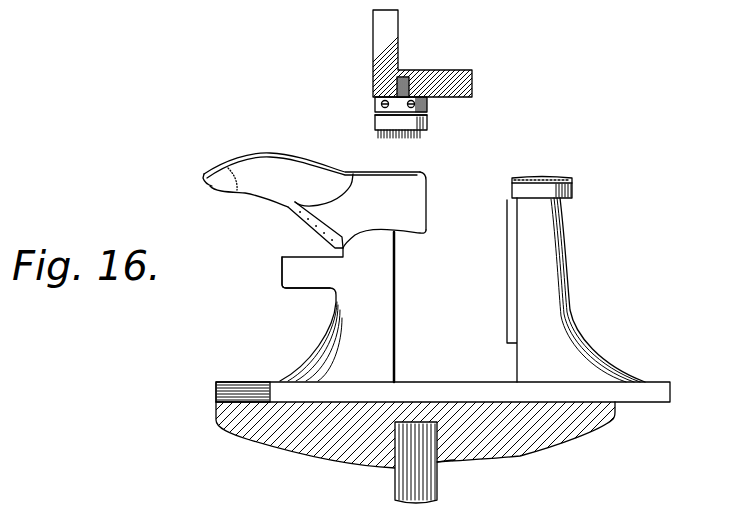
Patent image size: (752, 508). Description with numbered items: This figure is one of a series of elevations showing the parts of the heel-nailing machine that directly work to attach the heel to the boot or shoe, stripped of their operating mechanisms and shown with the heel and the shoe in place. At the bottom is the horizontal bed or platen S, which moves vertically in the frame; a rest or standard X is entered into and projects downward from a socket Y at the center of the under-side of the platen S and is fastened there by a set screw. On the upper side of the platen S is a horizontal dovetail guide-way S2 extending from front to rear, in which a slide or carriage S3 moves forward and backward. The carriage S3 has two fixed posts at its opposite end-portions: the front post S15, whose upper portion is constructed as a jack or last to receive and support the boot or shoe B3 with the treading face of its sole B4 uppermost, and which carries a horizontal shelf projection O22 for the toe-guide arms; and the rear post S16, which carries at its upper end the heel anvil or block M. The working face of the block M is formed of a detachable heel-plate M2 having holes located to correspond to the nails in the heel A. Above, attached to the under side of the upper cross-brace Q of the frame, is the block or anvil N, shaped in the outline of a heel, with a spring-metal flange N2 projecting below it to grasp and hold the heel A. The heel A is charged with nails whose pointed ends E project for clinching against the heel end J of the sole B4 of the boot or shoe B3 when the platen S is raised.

The upper cross brace Q is at (473, 83).
The block or anvil N is at (375, 103).
The flange N2 is at (428, 105).
The heel A is at (428, 122).
The nail points E is at (420, 135).
The sole B4 is at (330, 165).
The heel end of sole J is at (408, 191).
The boot or shoe B3 is at (318, 208).
The horizontal shelf projection O22 is at (306, 272).
The front post S15 is at (337, 307).
The rear post S16 is at (576, 290).
The anvil or block M is at (572, 192).
The heel-plate M2 is at (572, 181).
The dovetail guide-way S2 is at (245, 383).
The slide or carriage S3 is at (443, 392).
The bed or platen S is at (411, 435).
The rest or standard X is at (438, 486).
The socket Y is at (440, 462).